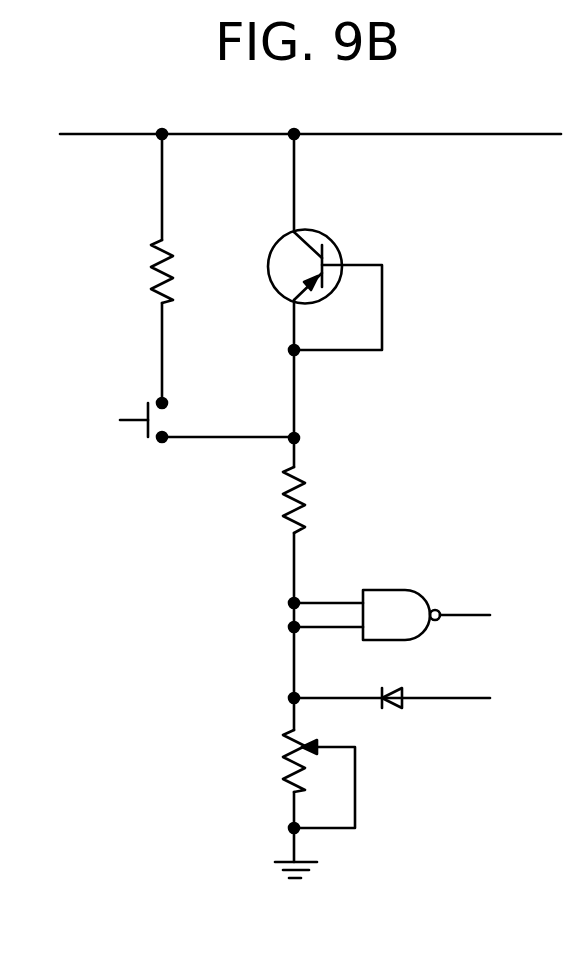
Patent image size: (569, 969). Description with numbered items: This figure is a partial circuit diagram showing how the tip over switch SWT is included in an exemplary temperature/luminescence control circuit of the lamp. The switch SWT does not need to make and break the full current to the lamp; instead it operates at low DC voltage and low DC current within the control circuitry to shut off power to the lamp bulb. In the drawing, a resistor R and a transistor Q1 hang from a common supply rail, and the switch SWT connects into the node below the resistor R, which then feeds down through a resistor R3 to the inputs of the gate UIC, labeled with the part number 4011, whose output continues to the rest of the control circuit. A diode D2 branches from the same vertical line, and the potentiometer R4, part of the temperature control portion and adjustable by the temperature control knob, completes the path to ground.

The resistor R 2K R is at (140, 268).
The tip over switch SWT is at (122, 420).
The transistor C59015C Q1 is at (337, 285).
The resistor R3 10K R3 is at (320, 520).
The NAND gate 4011 is at (389, 595).
The IC UIC is at (389, 595).
The diode D2 is at (392, 723).
The potentiometer R4 is at (296, 788).